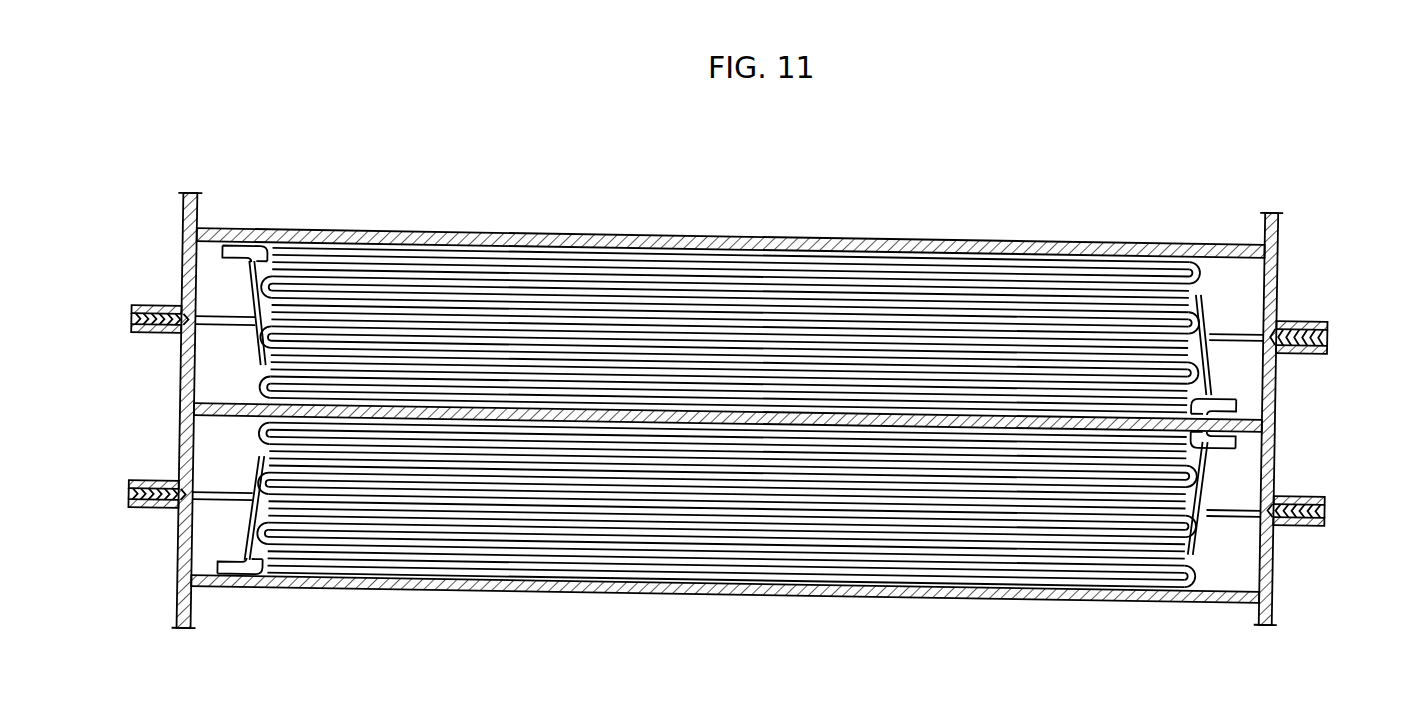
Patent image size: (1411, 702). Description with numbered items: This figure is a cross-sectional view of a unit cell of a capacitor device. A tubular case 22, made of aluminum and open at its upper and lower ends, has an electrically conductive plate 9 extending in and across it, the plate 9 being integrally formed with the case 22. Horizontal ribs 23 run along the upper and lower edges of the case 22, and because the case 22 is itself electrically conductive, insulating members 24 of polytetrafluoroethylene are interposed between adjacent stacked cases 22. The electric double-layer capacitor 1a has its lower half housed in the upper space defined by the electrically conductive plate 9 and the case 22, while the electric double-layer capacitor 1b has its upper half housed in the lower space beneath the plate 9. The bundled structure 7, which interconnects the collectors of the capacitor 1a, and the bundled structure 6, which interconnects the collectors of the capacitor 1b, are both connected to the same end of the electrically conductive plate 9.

The electric double-layer capacitor 1a is at (1226, 301).
The electric double-layer capacitor 1b is at (1230, 547).
The bundled structure 6 is at (206, 259).
The bundled structure 7 is at (193, 552).
The electrically conductive plate 9 is at (1152, 236).
The tubular case 22 is at (1271, 258).
The horizontal ribs 23 is at (1320, 317).
The insulating members 24 is at (1321, 330).